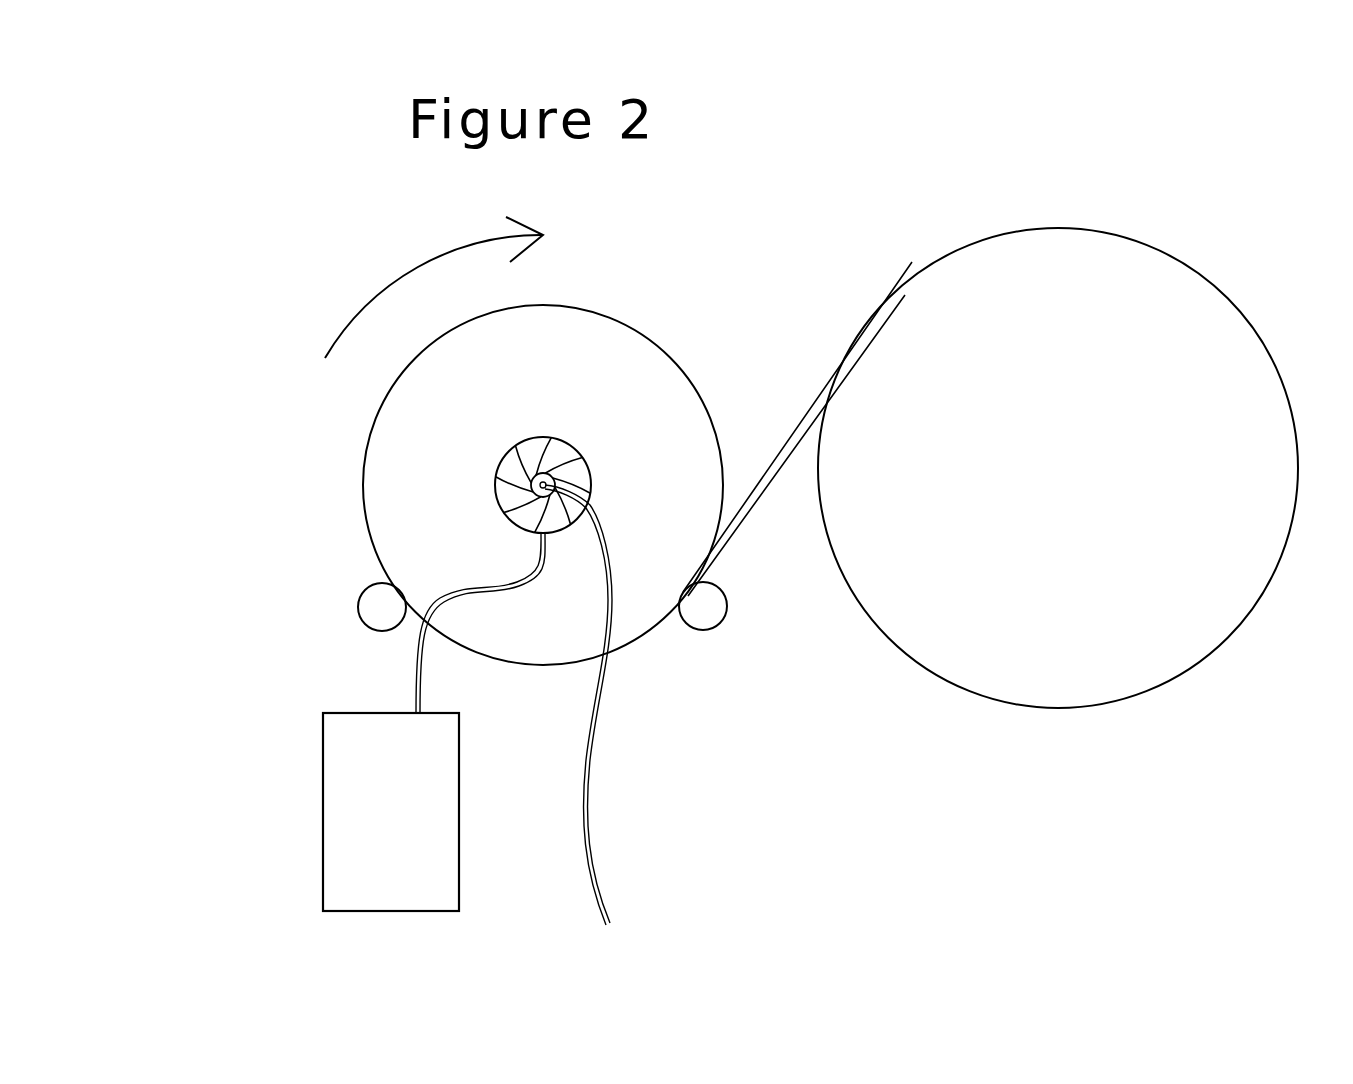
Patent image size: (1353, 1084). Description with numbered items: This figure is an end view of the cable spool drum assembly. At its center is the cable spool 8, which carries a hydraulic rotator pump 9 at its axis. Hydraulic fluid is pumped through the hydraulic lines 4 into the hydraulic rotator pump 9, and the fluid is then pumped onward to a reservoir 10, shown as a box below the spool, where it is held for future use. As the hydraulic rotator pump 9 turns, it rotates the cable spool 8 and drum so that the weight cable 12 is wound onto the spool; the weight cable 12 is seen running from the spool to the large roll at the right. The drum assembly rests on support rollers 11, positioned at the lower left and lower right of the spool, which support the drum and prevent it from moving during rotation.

The cable spool 8 is at (650, 330).
The hydraulic rotator pump 9 is at (487, 447).
The weight cable 12 is at (845, 380).
The support rollers 11 is at (348, 595).
The hydraulic lines 4 is at (400, 685).
The reservoir 10 is at (312, 832).